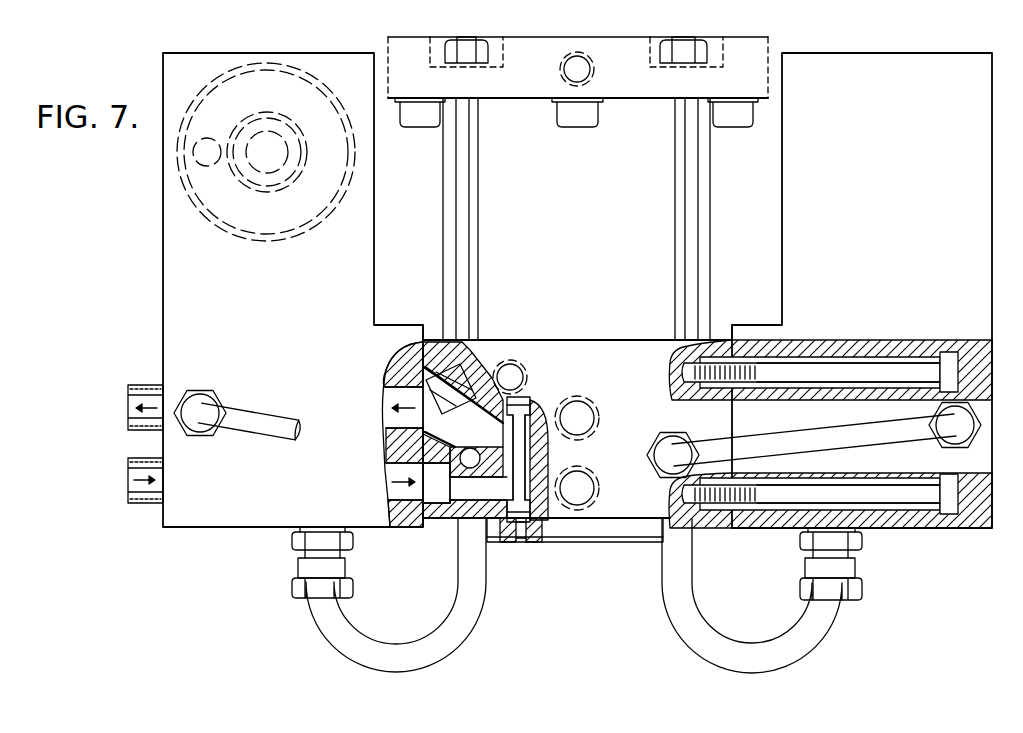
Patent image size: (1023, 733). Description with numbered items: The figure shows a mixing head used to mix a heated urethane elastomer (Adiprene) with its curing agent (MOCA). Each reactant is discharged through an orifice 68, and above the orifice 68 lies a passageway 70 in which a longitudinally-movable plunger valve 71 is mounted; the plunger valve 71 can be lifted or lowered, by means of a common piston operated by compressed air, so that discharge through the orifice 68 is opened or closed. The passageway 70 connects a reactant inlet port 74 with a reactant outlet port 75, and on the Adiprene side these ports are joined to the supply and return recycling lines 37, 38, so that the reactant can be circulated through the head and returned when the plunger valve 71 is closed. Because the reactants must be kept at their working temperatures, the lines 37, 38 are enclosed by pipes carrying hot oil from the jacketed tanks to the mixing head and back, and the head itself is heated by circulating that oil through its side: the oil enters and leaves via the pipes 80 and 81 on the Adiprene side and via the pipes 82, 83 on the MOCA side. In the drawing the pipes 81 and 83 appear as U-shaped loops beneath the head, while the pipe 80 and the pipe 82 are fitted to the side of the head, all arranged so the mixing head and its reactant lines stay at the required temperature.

The supply recycling line 37 is at (160, 467).
The return recycling line 38 is at (145, 392).
The orifice 68 is at (517, 543).
The passageway 70 is at (530, 452).
The plunger valve 71 is at (520, 432).
The reactant inlet port 74 is at (442, 490).
The reactant outlet port 75 is at (443, 410).
The oil pipe 80 is at (245, 420).
The oil pipe 81 is at (320, 612).
The oil pipe 82 is at (813, 417).
The oil pipe 83 is at (837, 622).